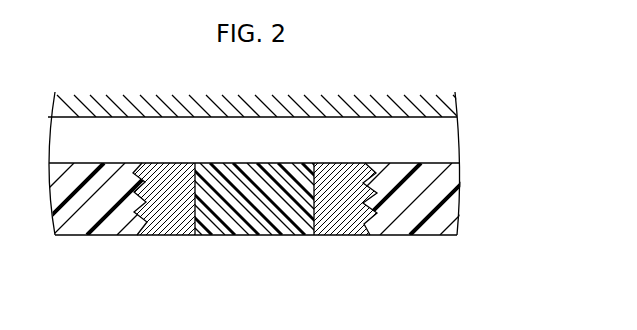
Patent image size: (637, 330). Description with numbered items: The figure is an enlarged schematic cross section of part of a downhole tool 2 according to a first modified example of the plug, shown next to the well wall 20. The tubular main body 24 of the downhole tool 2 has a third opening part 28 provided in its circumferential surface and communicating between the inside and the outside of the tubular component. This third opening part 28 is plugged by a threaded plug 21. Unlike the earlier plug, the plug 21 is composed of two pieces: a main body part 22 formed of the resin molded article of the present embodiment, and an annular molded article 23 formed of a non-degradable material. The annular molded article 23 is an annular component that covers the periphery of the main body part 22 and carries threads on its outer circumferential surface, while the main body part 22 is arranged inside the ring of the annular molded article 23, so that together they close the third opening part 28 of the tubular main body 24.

The downhole tool 2 is at (257, 186).
The well wall 20 is at (437, 117).
The plug 21 is at (229, 237).
The main body part 22 is at (160, 274).
The annular molded article 23 is at (176, 223).
The tubular main body 24 is at (437, 200).
The third opening part 28 is at (358, 169).